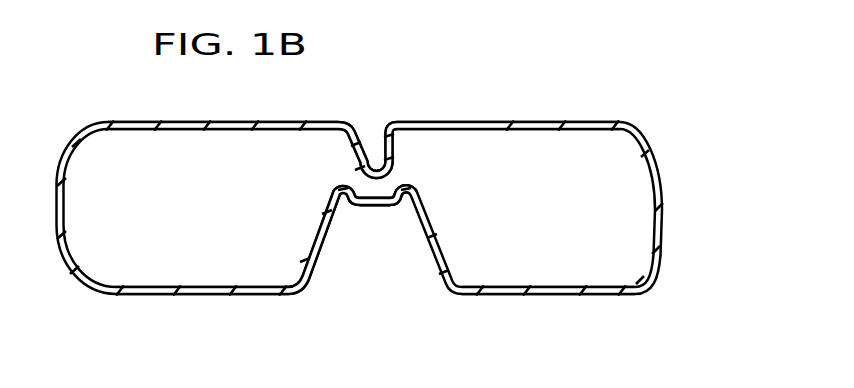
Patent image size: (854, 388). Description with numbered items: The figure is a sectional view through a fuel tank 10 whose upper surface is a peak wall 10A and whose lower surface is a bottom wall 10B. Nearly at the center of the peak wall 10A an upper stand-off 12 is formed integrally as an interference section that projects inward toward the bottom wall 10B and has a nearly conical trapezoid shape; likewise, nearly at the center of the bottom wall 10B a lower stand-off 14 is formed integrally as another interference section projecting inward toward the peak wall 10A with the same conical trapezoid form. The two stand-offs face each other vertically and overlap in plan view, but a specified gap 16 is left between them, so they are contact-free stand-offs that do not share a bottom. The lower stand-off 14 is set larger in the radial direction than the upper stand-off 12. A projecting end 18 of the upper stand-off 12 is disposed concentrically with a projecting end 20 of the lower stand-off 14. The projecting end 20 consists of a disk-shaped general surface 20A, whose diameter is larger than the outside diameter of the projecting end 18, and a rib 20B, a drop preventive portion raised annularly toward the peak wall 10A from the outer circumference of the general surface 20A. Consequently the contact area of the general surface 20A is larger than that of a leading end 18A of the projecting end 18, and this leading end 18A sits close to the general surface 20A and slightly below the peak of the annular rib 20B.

The fuel tank 10 is at (590, 99).
The peak wall 10A is at (519, 121).
The bottom wall 10B is at (552, 295).
The upper stand-off 12 is at (355, 155).
The lower stand-off 14 is at (317, 220).
The gap 16 is at (391, 179).
The leading end 18A is at (372, 205).
The projecting end 18 is at (375, 198).
The projecting end 20 is at (398, 203).
The general surface 20A is at (375, 176).
The rib 20B is at (412, 174).